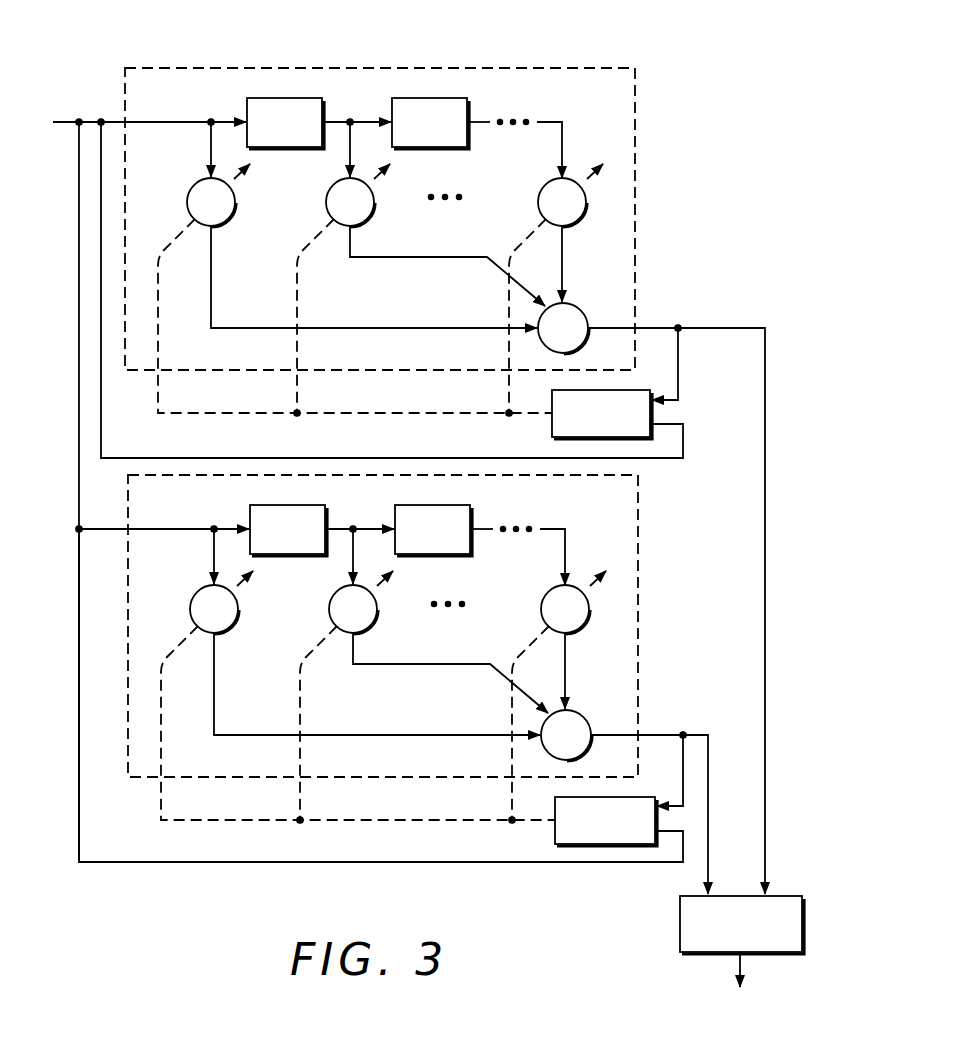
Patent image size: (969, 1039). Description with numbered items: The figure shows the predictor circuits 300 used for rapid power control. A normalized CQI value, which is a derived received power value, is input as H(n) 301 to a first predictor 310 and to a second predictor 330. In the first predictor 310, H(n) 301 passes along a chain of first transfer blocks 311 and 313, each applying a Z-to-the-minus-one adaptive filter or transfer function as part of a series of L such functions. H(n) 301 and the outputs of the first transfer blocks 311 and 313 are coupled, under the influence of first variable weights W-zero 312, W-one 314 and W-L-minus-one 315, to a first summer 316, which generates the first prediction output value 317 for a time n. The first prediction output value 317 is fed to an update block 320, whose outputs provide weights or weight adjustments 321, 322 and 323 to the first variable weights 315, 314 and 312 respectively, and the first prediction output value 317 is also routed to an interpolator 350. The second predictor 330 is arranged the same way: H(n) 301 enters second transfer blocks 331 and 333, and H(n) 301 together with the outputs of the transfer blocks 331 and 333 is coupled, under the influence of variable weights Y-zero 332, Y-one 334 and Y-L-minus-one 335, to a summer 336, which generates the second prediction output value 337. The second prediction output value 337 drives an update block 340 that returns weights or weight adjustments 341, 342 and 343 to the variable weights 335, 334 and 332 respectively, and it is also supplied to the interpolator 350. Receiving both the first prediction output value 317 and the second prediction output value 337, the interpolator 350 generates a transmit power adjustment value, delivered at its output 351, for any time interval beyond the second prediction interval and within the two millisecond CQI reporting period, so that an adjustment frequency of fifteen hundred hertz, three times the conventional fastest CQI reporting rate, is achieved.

The predictor circuits 300 is at (682, 104).
The H(n) 301 is at (58, 84).
The first predictor 310 is at (635, 160).
The first transfer block 311 is at (268, 98).
The first variable weight W0 312 is at (232, 213).
The first transfer block 313 is at (412, 98).
The first variable weight W1 314 is at (372, 213).
The first variable weight WL-1 315 is at (540, 196).
The first summer 316 is at (580, 309).
The first prediction output value 317 is at (657, 327).
The update block 320 is at (552, 423).
The weight adjustment 321 is at (509, 296).
The weight adjustment 322 is at (297, 302).
The weight adjustment 323 is at (157, 306).
The second predictor 330 is at (386, 626).
The second transfer block 331 is at (279, 518).
The variable weight Y0 332 is at (365, 632).
The second transfer block 333 is at (424, 518).
The variable weight Y1 334 is at (438, 621).
The variable weight YL-1 335 is at (550, 640).
The summer 336 is at (588, 726).
The second prediction output value 337 is at (649, 798).
The update block 340 is at (381, 695).
The weight adjustment 341 is at (503, 724).
The weight adjustment 342 is at (321, 724).
The weight adjustment 343 is at (357, 723).
The interpolator 350 is at (680, 923).
The interpolator output 351 is at (740, 969).